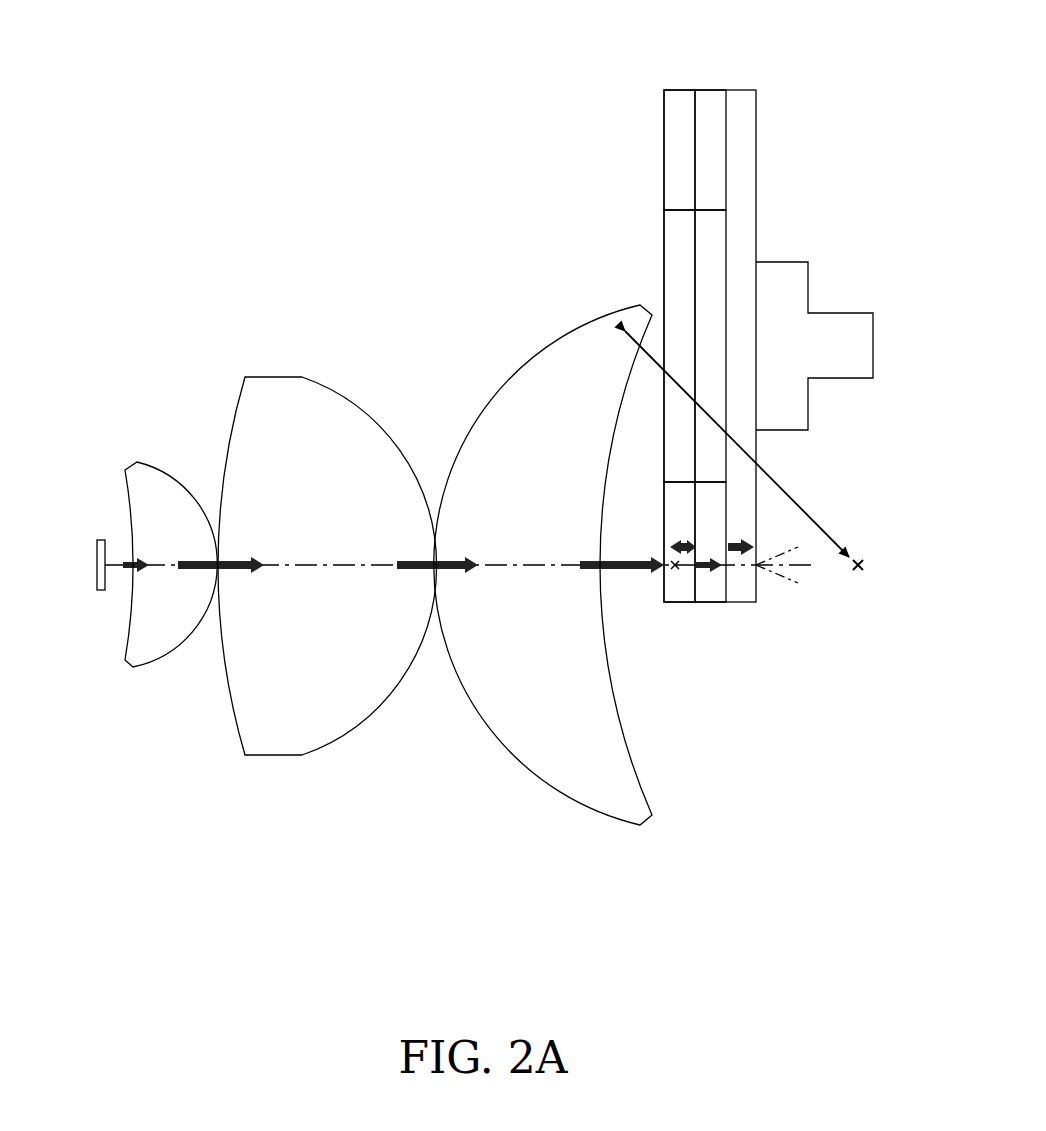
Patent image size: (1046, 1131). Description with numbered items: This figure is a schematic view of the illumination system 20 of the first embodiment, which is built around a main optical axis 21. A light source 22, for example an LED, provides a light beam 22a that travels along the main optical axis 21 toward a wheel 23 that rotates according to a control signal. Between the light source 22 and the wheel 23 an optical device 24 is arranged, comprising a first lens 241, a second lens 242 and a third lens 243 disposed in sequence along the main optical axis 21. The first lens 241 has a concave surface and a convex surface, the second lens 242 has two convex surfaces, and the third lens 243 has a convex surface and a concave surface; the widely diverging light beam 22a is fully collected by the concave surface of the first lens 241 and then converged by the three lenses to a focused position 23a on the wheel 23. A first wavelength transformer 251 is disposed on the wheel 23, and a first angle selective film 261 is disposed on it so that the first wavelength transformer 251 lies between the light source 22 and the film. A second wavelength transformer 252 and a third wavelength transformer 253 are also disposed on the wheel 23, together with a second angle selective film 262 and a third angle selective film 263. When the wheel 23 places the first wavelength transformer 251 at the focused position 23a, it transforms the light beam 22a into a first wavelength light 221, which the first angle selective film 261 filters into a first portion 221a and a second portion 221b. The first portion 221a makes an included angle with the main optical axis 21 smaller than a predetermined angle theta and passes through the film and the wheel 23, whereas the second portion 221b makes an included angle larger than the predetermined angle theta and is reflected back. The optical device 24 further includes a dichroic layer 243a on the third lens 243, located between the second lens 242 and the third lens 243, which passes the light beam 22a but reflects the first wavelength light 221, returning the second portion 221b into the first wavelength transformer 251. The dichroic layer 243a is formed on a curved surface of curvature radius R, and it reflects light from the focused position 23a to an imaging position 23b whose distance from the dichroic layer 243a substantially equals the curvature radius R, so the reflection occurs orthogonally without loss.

The illumination system 20 is at (354, 117).
The main optical axis 21 is at (286, 567).
The light source 22 is at (100, 591).
The light beam 22a is at (122, 562).
The wheel 23 is at (728, 366).
The focused position 23a is at (672, 571).
The imaging position 23b is at (862, 562).
The optical device 24 is at (416, 564).
The first lens 241 is at (172, 668).
The second lens 242 is at (360, 725).
The third lens 243 is at (630, 765).
The dichroic layer 243a is at (540, 350).
The first wavelength light 221 is at (707, 556).
The first portion 221a is at (745, 545).
The second portion 221b is at (668, 547).
The first wavelength transformer 251 is at (678, 604).
The second wavelength transformer 252 is at (680, 225).
The third wavelength transformer 253 is at (678, 100).
The first angle selective film 261 is at (717, 604).
The second angle selective film 262 is at (720, 260).
The third angle selective film 263 is at (708, 100).
The curvature radius R is at (737, 444).
The predetermined angle theta is at (800, 566).